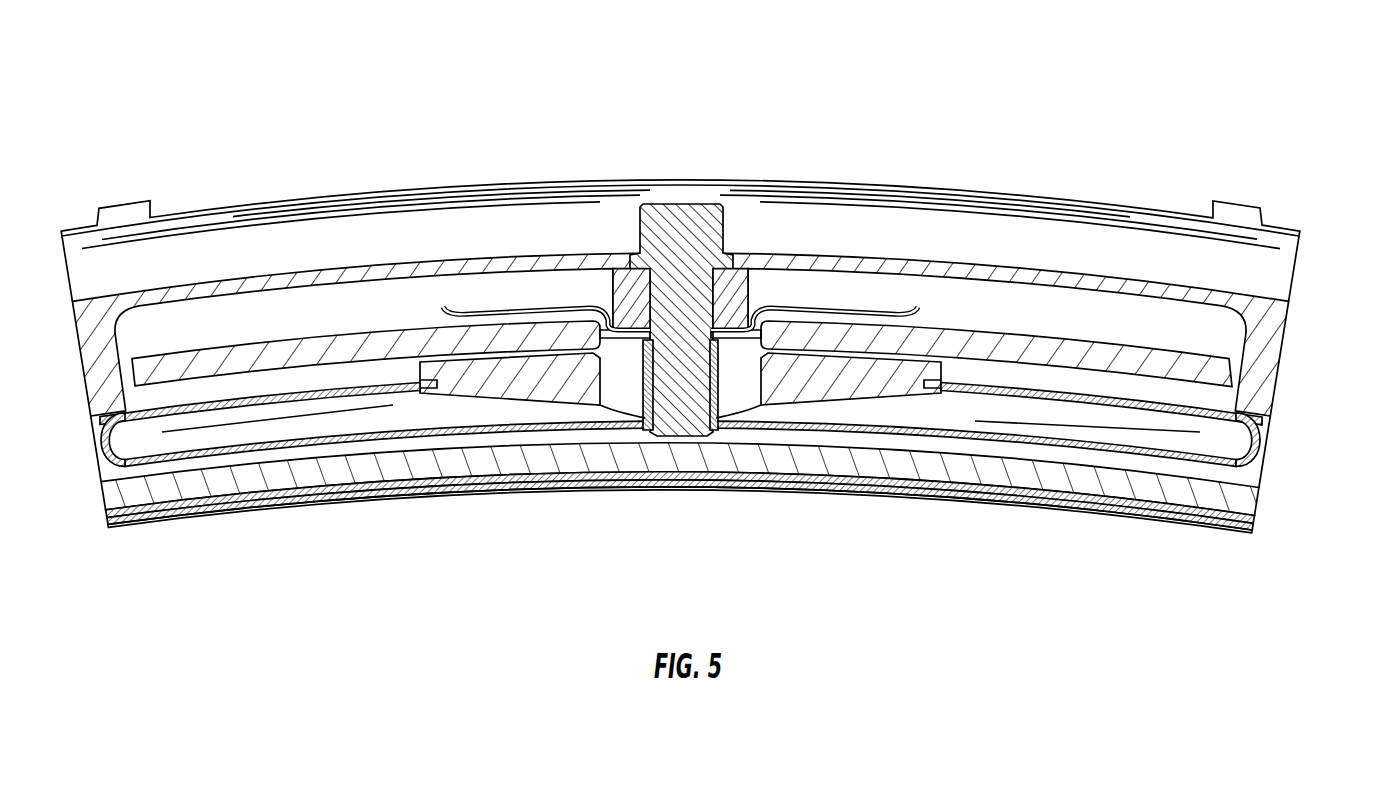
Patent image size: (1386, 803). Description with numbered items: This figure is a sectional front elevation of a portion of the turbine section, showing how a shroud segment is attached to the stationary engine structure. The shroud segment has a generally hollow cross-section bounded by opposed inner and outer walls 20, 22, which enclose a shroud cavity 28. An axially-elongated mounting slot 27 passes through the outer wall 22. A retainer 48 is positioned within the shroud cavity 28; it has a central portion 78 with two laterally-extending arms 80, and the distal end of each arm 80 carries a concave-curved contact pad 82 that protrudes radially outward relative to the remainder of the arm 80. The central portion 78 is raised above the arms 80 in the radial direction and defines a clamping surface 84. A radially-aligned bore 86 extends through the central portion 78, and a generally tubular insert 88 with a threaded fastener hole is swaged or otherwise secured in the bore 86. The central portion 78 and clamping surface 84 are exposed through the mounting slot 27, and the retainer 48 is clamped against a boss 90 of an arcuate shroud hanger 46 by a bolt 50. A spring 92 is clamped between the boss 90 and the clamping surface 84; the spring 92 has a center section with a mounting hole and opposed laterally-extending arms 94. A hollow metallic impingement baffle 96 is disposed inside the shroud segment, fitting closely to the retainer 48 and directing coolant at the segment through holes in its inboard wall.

The inner wall 20 is at (1196, 497).
The outer wall 22 is at (1218, 366).
The mounting slot 27 is at (797, 322).
The shroud cavity 28 is at (1212, 402).
The shroud hanger 46 is at (975, 241).
The retainer 48 is at (805, 406).
The bolt 50 is at (669, 251).
The central portion 78 is at (591, 386).
The arm 80 is at (520, 385).
The contact pad 82 is at (440, 382).
The clamping surface 84 is at (752, 341).
The bore 86 is at (737, 339).
The insert 88 is at (643, 386).
The boss 90 is at (732, 263).
The spring 92 is at (535, 289).
The arm 94 is at (487, 318).
The impingement baffle 96 is at (1248, 438).